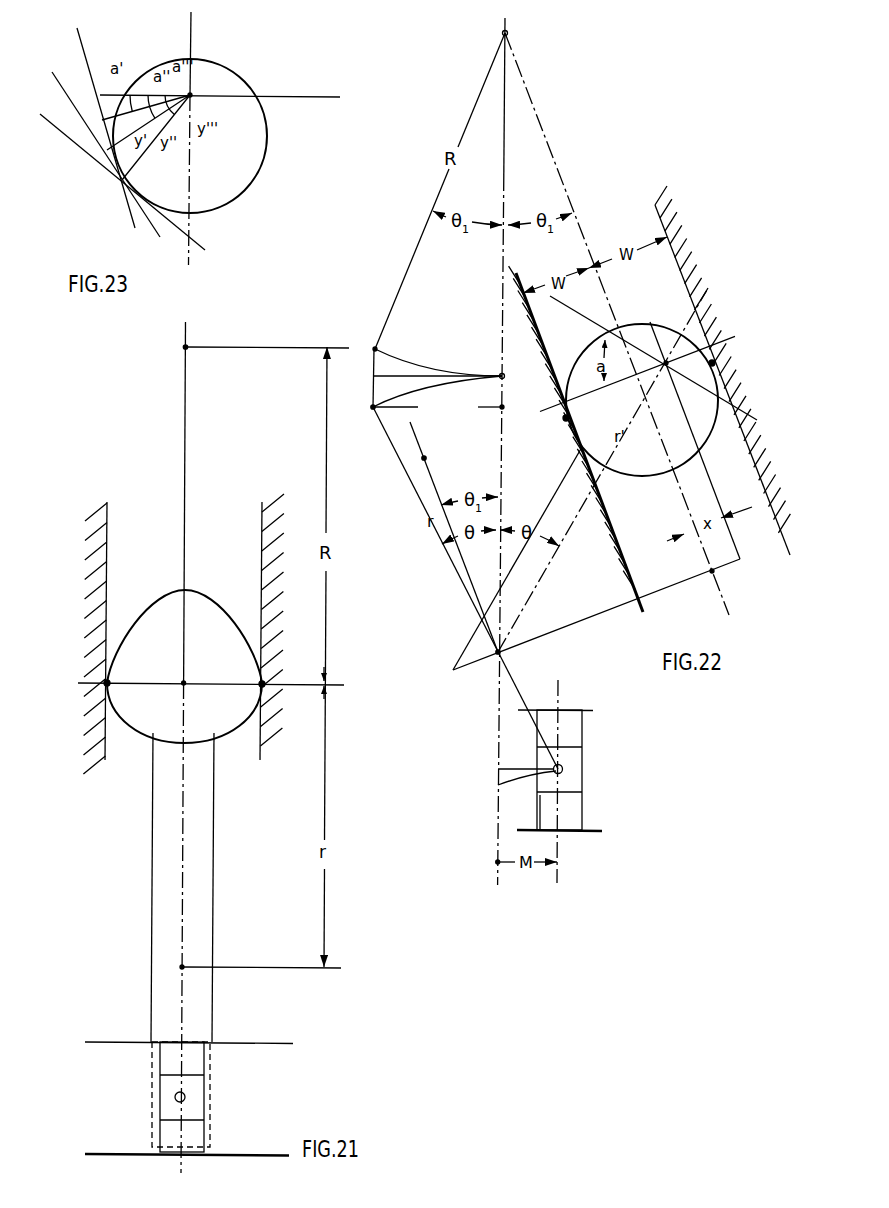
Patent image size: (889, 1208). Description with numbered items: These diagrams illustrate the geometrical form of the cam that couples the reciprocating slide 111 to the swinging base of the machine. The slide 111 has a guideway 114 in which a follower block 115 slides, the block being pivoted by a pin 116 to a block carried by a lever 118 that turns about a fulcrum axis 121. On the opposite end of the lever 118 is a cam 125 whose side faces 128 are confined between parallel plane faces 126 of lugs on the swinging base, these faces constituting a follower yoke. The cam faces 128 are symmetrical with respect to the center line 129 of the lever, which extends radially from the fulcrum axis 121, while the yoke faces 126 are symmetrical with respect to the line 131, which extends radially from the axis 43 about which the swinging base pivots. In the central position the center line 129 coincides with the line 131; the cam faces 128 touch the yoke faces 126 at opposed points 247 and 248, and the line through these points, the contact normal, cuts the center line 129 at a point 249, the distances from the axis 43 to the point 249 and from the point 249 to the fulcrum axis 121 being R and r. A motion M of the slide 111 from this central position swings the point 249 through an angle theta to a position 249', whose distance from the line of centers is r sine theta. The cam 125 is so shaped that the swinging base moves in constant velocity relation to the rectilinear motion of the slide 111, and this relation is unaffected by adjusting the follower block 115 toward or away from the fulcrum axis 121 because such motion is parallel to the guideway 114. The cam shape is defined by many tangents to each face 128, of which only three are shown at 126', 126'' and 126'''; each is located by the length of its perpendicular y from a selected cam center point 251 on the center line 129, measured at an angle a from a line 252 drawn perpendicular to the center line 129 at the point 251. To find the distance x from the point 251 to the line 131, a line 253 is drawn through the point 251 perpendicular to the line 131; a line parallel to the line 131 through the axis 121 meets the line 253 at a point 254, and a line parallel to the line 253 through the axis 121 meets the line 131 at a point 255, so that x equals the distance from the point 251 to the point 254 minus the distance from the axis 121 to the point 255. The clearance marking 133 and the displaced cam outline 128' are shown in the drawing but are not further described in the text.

In FIG. 21, the axis of the swinging base 43 is at (187, 346).
In FIG. 22, the axis of the swinging base 43 is at (507, 35).
In FIG. 21, the center line of yoke surfaces 131 is at (186, 392).
In FIG. 22, the center line of yoke surfaces 131 is at (552, 156).
In FIG. 21, the parallel plane faces 126 is at (183, 634).
In FIG. 22, the parallel plane faces 126 is at (650, 399).
In FIG. 21, the side faces of the cam 128 is at (156, 657).
In FIG. 22, the side faces of the cam 128 is at (640, 400).
In FIG. 23, the side faces of the cam 128 is at (213, 127).
In FIG. 21, the intersection point of contact normal and center line 249 is at (211, 667).
In FIG. 22, the intersection point of contact normal and center line 249 is at (439, 379).
In FIG. 21, the contact point 247 is at (104, 686).
In FIG. 21, the contact point 248 is at (262, 688).
In FIG. 21, the clearance distance 133 is at (322, 683).
In FIG. 21, the center line of the lever 129 is at (183, 826).
In FIG. 22, the center line of the lever 129 is at (531, 587).
In FIG. 23, the center line of the lever 129 is at (192, 37).
In FIG. 21, the lever 118 is at (198, 908).
In FIG. 22, the lever 118 is at (548, 586).
In FIG. 21, the fulcrum axis 121 is at (184, 970).
In FIG. 22, the fulcrum axis 121 is at (502, 654).
In FIG. 21, the pin 116 is at (185, 1094).
In FIG. 22, the pin 116 is at (563, 768).
In FIG. 21, the slide 111 is at (238, 1118).
In FIG. 22, the slide 111 is at (588, 730).
In FIG. 21, the guideway 114 is at (172, 1140).
In FIG. 22, the guideway 114 is at (570, 722).
In FIG. 22, the follower block 115 is at (578, 777).
In FIG. 22, the cam 125 is at (656, 336).
In FIG. 22, the cam center point 251 is at (710, 339).
In FIG. 23, the cam center point 251 is at (196, 94).
In FIG. 22, the line perpendicular to center line 252 is at (743, 413).
In FIG. 23, the line perpendicular to center line 252 is at (282, 99).
In FIG. 22, the line through point 251 perpendicular to center line 131 253 is at (412, 462).
In FIG. 22, the intersection point 254 is at (426, 459).
In FIG. 22, the intersection point 255 is at (711, 571).
In FIG. 22, the swung position of point 249 249' is at (356, 422).
In FIG. 22, the displaced cam head surface 128' is at (696, 483).
In FIG. 23, the tangent line 126' is at (106, 128).
In FIG. 23, the tangent line 126'' is at (93, 141).
In FIG. 23, the tangent line 126''' is at (111, 169).